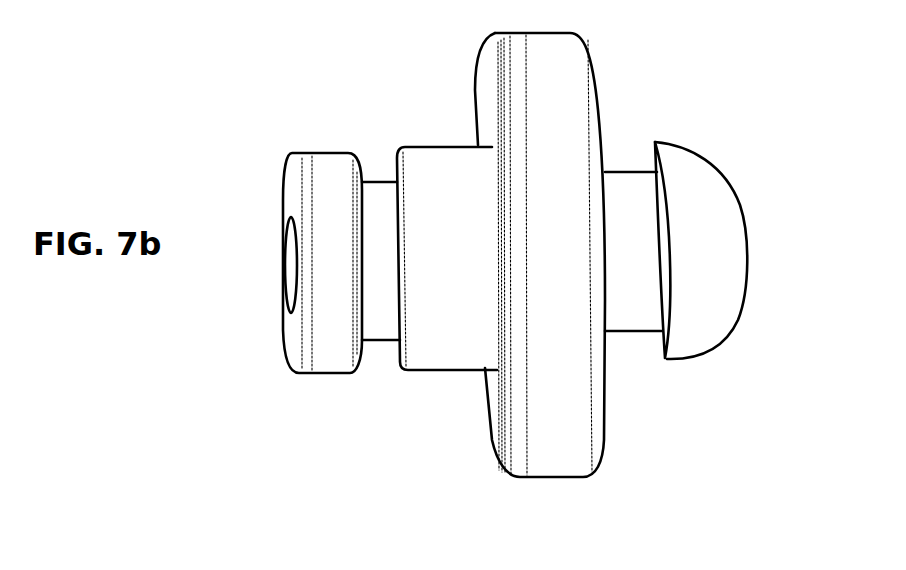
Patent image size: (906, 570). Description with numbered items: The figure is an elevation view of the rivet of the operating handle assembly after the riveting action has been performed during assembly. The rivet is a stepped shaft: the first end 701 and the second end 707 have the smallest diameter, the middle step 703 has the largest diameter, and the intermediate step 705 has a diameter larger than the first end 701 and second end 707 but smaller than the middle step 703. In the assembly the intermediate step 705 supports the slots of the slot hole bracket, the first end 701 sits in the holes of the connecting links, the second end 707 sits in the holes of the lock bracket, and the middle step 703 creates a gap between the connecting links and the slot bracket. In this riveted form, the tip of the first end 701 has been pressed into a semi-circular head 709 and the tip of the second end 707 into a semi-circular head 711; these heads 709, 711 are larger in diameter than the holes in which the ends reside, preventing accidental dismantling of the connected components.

The first end 701 is at (404, 330).
The middle step 703 is at (552, 463).
The intermediate step 705 is at (422, 373).
The second end 707 is at (648, 313).
The semi-circular head 709 is at (708, 332).
The semi-circular head 711 is at (305, 375).